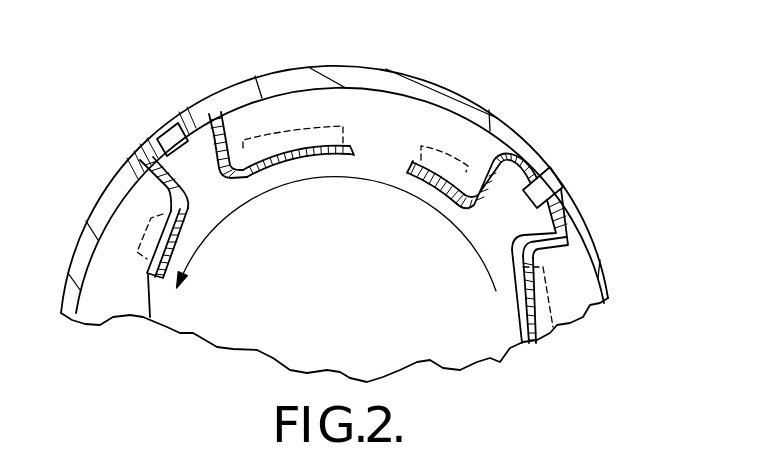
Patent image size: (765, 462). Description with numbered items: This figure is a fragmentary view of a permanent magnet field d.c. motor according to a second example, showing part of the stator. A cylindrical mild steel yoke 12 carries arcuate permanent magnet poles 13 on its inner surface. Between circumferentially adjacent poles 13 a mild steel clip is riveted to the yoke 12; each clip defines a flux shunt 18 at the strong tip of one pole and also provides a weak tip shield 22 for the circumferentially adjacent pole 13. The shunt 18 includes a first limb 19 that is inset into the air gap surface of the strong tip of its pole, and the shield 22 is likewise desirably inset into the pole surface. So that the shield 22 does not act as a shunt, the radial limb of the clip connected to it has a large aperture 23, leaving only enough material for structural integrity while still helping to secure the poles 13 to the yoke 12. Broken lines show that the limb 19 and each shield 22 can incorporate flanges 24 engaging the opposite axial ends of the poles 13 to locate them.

The yoke 12 is at (344, 86).
The permanent magnet poles 13 is at (387, 133).
The flux shunt 18 is at (150, 143).
The first limb 19 is at (155, 221).
The weak tip shield 22 is at (298, 160).
The aperture 23 is at (220, 150).
The flanges 24 is at (278, 137).